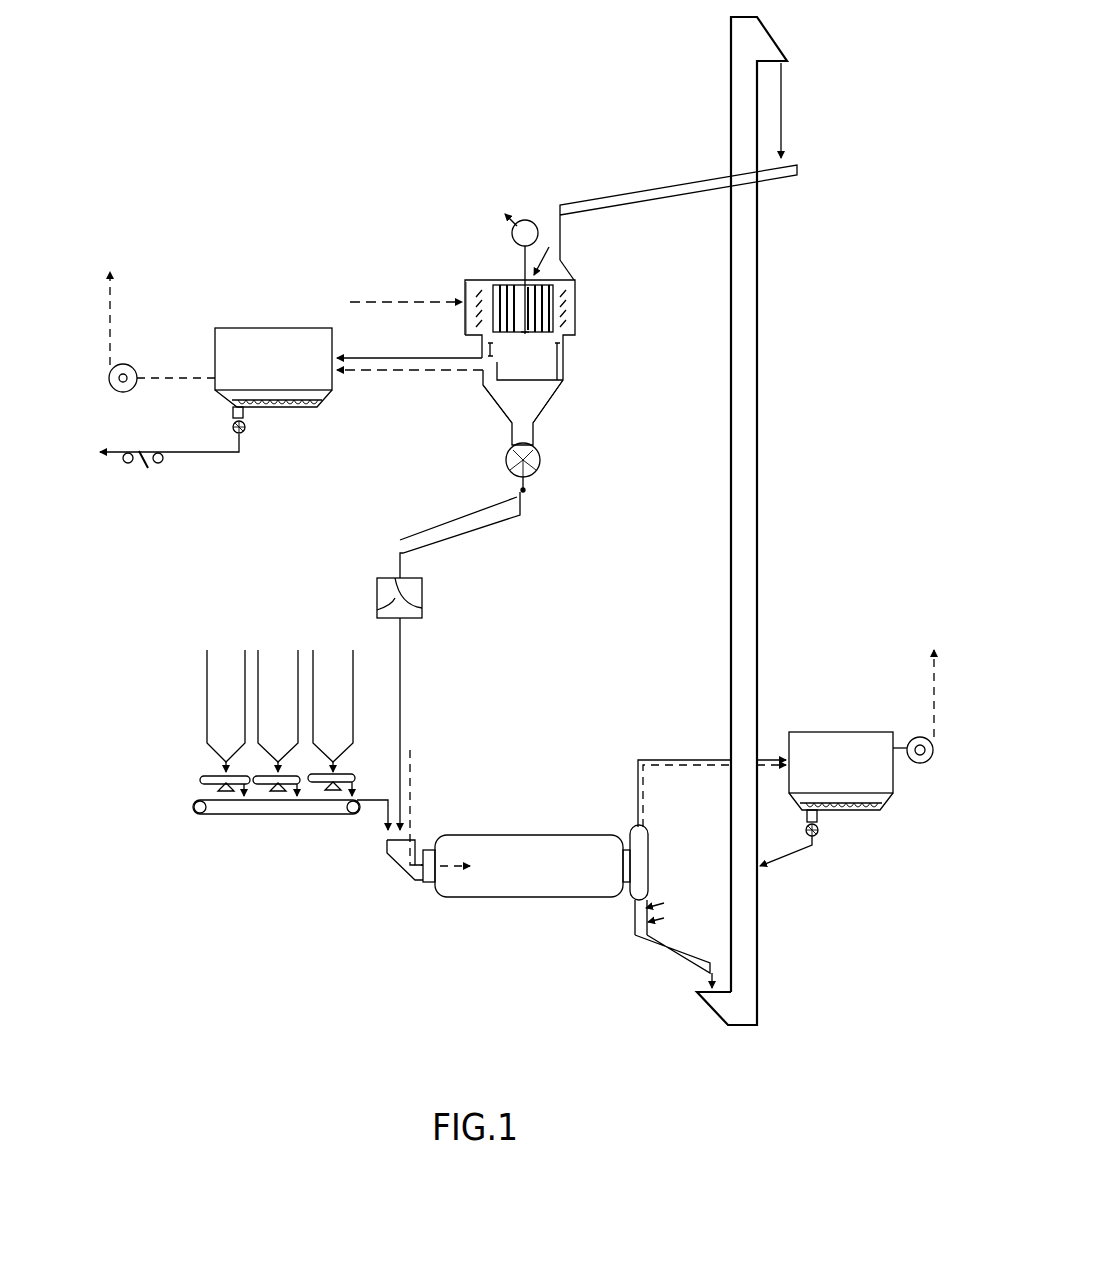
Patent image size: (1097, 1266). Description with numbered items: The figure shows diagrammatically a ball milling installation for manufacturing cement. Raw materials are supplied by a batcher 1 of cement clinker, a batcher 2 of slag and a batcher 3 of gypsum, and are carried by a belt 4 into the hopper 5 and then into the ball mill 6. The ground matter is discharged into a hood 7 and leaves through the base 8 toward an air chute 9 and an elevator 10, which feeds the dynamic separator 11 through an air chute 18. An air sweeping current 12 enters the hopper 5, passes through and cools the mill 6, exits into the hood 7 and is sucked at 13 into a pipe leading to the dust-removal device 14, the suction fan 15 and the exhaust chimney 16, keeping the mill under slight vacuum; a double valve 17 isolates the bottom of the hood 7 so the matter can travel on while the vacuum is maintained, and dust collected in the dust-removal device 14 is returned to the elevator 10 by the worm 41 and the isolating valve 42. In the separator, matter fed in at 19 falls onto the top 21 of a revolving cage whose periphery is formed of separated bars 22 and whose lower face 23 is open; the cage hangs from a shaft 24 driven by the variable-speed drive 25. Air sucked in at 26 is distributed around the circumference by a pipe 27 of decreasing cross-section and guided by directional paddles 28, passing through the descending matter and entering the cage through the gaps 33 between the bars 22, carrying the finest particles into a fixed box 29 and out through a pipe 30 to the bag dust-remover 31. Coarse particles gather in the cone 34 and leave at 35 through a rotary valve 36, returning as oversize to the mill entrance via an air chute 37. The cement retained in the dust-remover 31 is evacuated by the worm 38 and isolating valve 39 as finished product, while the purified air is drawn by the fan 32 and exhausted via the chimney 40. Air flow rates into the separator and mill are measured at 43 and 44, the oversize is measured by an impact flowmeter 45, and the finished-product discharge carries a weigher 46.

The batcher of cement clinker 1 is at (208, 775).
The batcher of slag 2 is at (268, 775).
The batcher of gypsum 3 is at (343, 774).
The belt 4 is at (272, 815).
The hopper 5 is at (388, 866).
The ball mill 6 is at (507, 898).
The hood 7 is at (650, 864).
The base 8 is at (633, 905).
The air chute 9 is at (672, 955).
The elevator 10 is at (757, 484).
The dynamic separator 11 is at (566, 366).
The air sweeping current 12 is at (412, 764).
The suction point 13 is at (644, 800).
The dust-removal device 14 is at (841, 732).
The suction fan 15 is at (923, 764).
The exhaust chimney 16 is at (930, 678).
The double valve 17 is at (673, 912).
The air chute 18 is at (650, 187).
The feed inlet 19 is at (562, 263).
The top of the cage 21 is at (505, 280).
The bars 22 is at (552, 328).
The lower face of the cage 23 is at (525, 336).
The shaft 24 is at (520, 265).
The variable-speed drive 25 is at (533, 222).
The air inlet 26 is at (400, 302).
The pipe of decreasing cross-section 27 is at (567, 302).
The directional paddles 28 is at (468, 290).
The fixed box 29 is at (500, 400).
The pipe 30 is at (483, 380).
The bag dust-remover 31 is at (262, 328).
The fan 32 is at (132, 391).
The gaps 33 is at (555, 290).
The cone 34 is at (555, 402).
The oversize outlet 35 is at (528, 482).
The rotary valve 36 is at (541, 461).
The air chute 37 is at (472, 522).
The worm 38 is at (290, 410).
The isolating valve 39 is at (246, 432).
The chimney 40 is at (112, 308).
The worm 41 is at (852, 812).
The isolating valve 42 is at (818, 838).
The separator air flow measurement 43 is at (176, 378).
The mill air flow measurement 44 is at (894, 760).
The impact flowmeter 45 is at (422, 602).
The weigher 46 is at (148, 470).